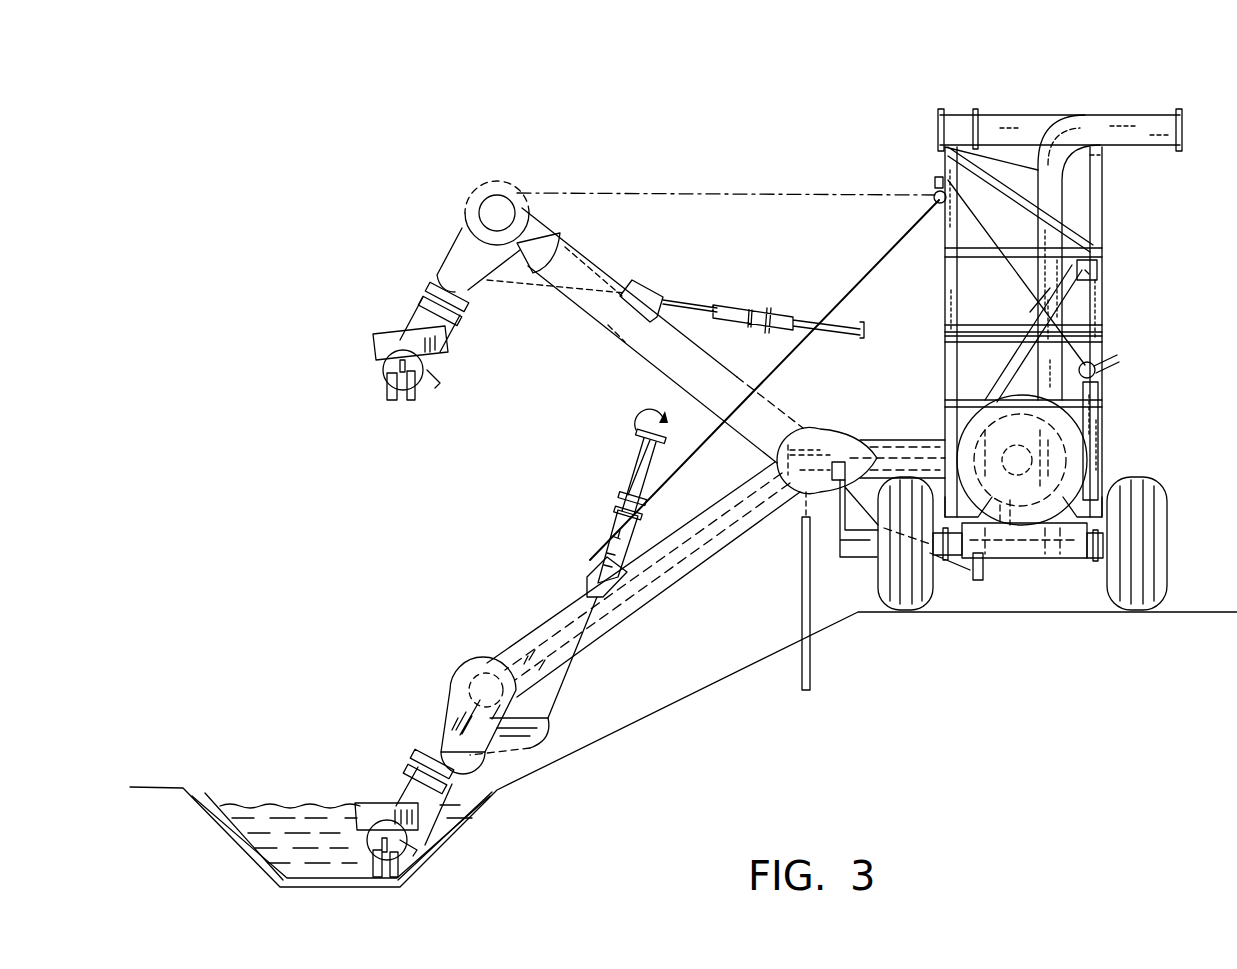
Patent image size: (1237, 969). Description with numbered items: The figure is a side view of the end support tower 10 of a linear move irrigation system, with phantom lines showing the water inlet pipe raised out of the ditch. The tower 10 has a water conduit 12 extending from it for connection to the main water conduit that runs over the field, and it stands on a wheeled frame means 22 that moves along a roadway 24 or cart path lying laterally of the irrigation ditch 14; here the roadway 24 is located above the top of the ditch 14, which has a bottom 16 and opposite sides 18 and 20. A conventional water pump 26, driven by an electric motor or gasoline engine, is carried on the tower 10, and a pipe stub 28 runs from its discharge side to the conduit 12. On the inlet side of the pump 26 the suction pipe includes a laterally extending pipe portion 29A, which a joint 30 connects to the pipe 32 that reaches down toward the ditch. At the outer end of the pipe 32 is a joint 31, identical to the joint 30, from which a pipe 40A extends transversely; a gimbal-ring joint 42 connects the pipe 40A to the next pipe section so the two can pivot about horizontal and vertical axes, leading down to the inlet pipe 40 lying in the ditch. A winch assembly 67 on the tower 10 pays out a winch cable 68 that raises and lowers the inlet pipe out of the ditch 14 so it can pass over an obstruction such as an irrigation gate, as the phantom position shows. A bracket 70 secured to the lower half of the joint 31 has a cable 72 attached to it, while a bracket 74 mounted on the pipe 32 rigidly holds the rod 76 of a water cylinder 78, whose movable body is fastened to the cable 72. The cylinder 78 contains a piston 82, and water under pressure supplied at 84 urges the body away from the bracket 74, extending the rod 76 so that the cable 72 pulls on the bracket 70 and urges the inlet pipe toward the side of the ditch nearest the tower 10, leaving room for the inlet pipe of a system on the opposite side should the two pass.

The end support tower 10 is at (1118, 229).
The water conduit 12 is at (1130, 122).
The irrigation ditch 14 is at (350, 891).
The bottom 16 is at (313, 888).
The side 18 is at (448, 842).
The side 20 is at (257, 862).
The wheeled frame means 22 is at (1012, 570).
The roadway 24 is at (1060, 597).
The water pump 26 is at (1058, 448).
The pipe stub 28 is at (1050, 287).
The pipe portion 29A is at (920, 440).
The joint 30 is at (826, 418).
The joint 31 is at (446, 678).
The pipe 32 is at (717, 547).
The suction pipe 40 is at (417, 803).
The pipe 40A is at (440, 757).
The gimbal-ring joint 42 is at (423, 767).
The winch assembly 67 is at (1110, 343).
The winch cable 68 is at (570, 569).
The bracket 70 is at (537, 743).
The cable 72 is at (570, 680).
The bracket 74 is at (623, 567).
The rod 76 is at (660, 486).
The water cylinder 78 is at (622, 473).
The piston 82 is at (643, 440).
The water supply point 84 is at (634, 420).